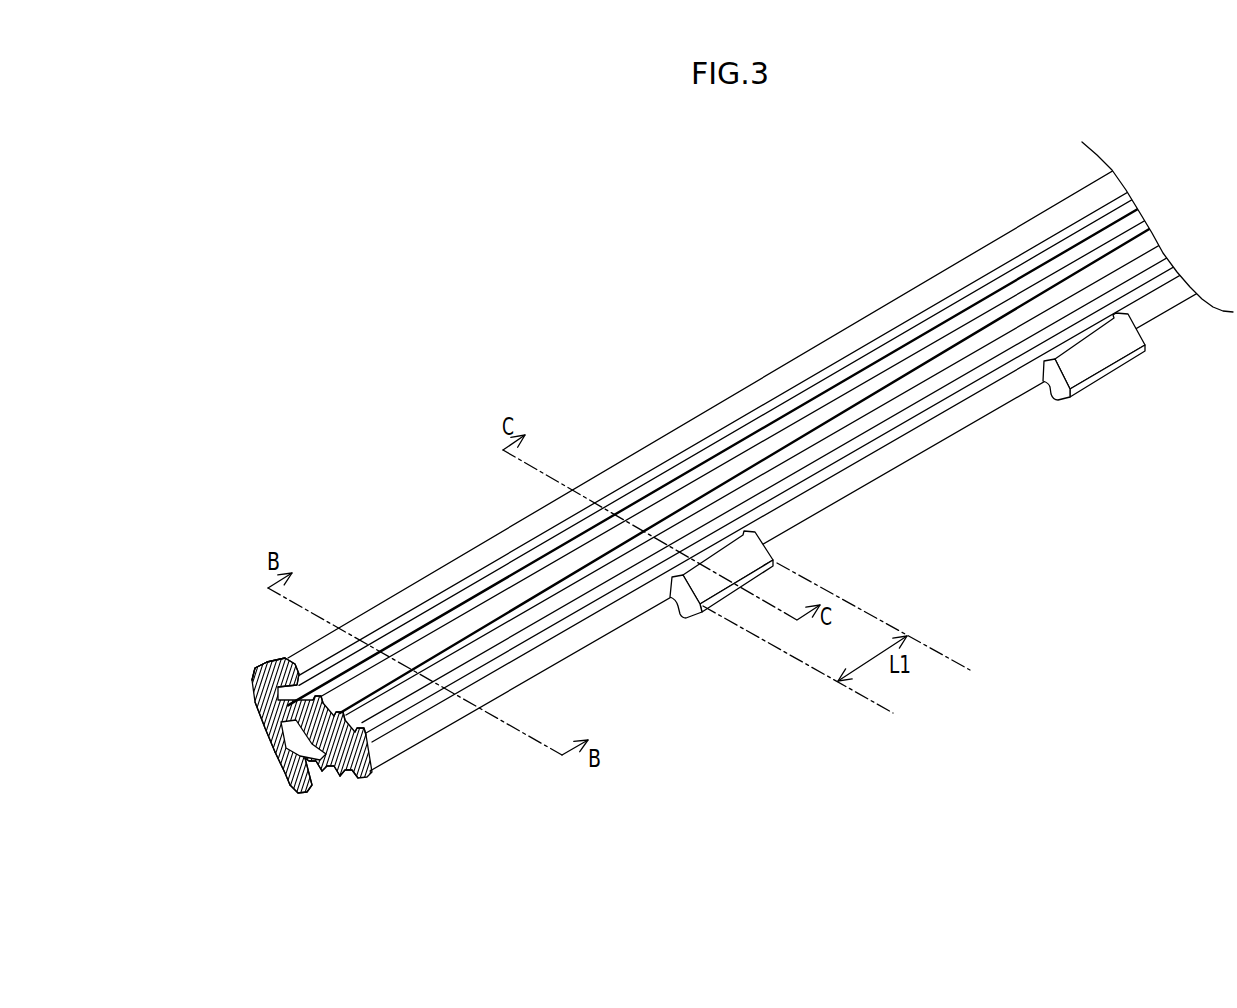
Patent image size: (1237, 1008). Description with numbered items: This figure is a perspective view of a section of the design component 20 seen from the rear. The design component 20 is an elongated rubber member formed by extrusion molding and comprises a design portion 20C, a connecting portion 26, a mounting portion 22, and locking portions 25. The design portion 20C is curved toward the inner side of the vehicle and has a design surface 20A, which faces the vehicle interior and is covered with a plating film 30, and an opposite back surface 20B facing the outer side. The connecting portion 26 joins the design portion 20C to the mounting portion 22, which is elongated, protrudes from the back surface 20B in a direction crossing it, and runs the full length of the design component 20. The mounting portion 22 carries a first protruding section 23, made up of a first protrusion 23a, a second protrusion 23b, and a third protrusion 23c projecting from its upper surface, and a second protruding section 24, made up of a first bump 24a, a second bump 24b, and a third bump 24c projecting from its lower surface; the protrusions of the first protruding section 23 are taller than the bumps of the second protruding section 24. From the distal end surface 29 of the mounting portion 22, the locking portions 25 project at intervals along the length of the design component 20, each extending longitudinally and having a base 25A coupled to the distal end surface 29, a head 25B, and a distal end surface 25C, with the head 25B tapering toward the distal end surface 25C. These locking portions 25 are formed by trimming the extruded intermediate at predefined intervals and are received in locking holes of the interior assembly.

The design component 20 is at (359, 543).
The design surface 20A is at (250, 689).
The back surface 20B is at (287, 748).
The design portion 20C is at (258, 705).
The mounting portion 22 is at (289, 780).
The first protruding section 23 is at (535, 784).
The first protrusion 23a is at (360, 731).
The second protrusion 23b is at (340, 714).
The third protrusion 23c is at (317, 698).
The second protruding section 24 is at (445, 848).
The first bump 24a is at (315, 762).
The second bump 24b is at (336, 768).
The third bump 24c is at (352, 772).
The locking portion 25 is at (1110, 384).
The base 25A is at (668, 600).
The head 25B is at (717, 612).
The distal end surface 25C is at (703, 588).
The connecting portion 26 is at (283, 718).
The distal end surface 29 is at (585, 640).
The plating film 30 is at (258, 676).